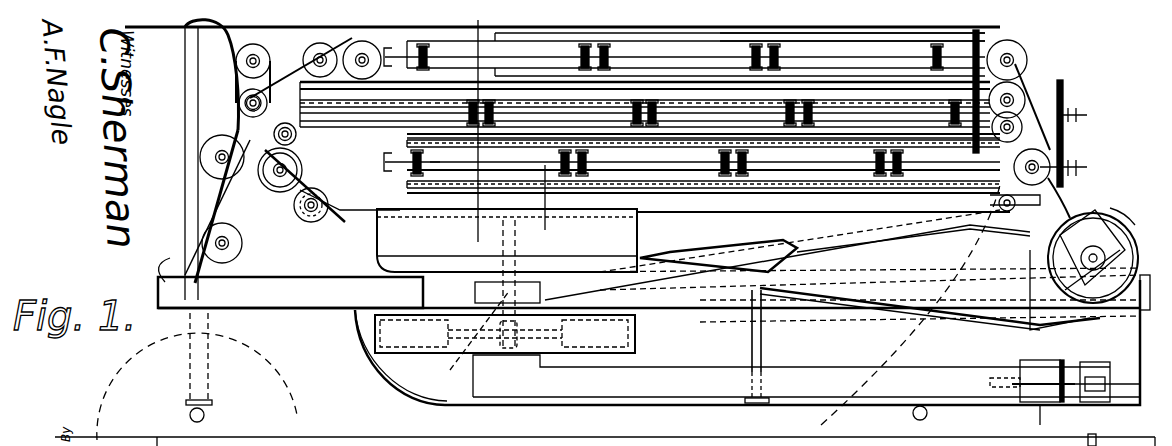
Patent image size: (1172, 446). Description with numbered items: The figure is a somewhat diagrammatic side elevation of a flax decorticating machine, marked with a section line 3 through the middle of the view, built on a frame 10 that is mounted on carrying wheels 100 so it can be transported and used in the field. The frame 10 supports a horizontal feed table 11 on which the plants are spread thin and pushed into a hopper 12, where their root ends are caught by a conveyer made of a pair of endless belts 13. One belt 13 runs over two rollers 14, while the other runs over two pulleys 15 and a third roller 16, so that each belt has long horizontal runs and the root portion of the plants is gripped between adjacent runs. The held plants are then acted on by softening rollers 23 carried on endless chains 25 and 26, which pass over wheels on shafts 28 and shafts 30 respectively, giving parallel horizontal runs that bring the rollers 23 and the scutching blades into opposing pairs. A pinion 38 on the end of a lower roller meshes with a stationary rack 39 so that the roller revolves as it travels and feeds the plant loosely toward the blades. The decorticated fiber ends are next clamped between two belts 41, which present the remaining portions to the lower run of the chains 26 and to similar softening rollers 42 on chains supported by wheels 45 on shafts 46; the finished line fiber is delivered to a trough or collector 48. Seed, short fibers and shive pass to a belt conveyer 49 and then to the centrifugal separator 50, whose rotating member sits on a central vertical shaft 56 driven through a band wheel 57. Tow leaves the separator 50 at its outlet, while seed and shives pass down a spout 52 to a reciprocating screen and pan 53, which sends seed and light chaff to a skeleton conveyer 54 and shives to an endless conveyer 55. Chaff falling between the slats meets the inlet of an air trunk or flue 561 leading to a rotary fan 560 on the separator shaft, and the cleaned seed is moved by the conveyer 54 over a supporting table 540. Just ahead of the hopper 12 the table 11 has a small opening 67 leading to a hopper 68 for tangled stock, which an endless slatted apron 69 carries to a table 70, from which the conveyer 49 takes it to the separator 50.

The section line 3 is at (496, 179).
The frame 10 is at (326, 306).
The feed table 11 is at (552, 27).
The hopper 12 is at (318, 42).
The endless belts 13 is at (722, 38).
The pulleys or rollers 14 is at (1040, 32).
The pulleys 15 is at (320, 60).
The third pulley or roller 16 is at (245, 103).
The softening rollers 23 is at (608, 50).
The endless chains or carriers 25 is at (1005, 55).
The endless chains or carriers 26 is at (838, 218).
The shafts 28 is at (790, 52).
The shafts 30 is at (878, 112).
The pinion 38 is at (280, 122).
The stationary rack 39 is at (1094, 118).
The belts 41 is at (205, 160).
The softening rollers 42 is at (612, 150).
The wheels 45 is at (420, 154).
The shafts 46 is at (542, 210).
The trough or collector 48 is at (149, 258).
The belt conveyer 49 is at (311, 222).
The centrifugal separator 50 is at (378, 243).
The spout 52 is at (725, 250).
The reciprocating screen and pan 53 is at (885, 305).
The slatted or skeleton conveyer 54 is at (1048, 360).
The endless conveyer 55 is at (1097, 362).
The central vertical shaft 56 is at (465, 339).
The band wheel 57 is at (475, 292).
The opening 67 is at (213, 33).
The hopper 68 is at (245, 52).
The endless slatted apron 69 is at (270, 142).
The table 70 is at (232, 212).
The carrying wheels 100 is at (297, 392).
The supporting table 540 is at (1040, 408).
The rotary fan 560 is at (612, 337).
The air trunk or flue 561 is at (963, 378).